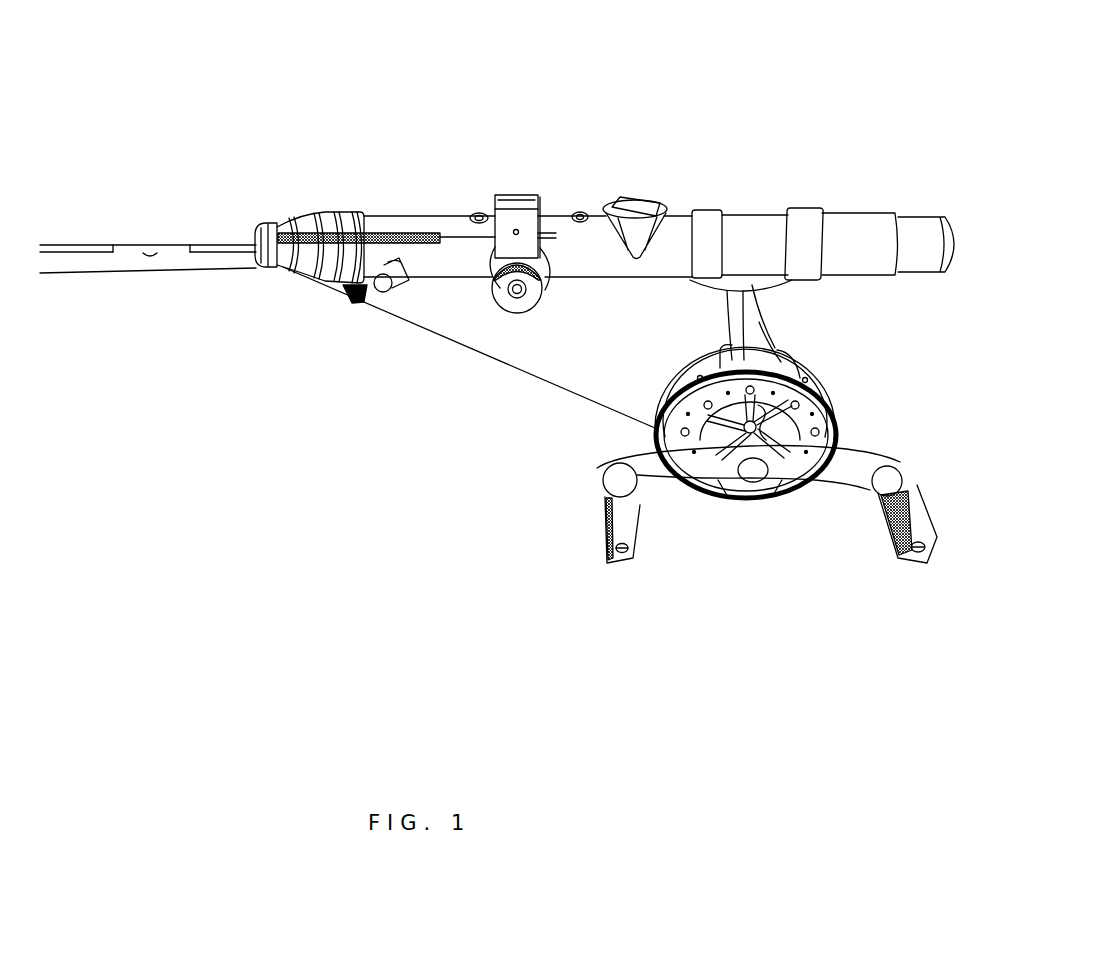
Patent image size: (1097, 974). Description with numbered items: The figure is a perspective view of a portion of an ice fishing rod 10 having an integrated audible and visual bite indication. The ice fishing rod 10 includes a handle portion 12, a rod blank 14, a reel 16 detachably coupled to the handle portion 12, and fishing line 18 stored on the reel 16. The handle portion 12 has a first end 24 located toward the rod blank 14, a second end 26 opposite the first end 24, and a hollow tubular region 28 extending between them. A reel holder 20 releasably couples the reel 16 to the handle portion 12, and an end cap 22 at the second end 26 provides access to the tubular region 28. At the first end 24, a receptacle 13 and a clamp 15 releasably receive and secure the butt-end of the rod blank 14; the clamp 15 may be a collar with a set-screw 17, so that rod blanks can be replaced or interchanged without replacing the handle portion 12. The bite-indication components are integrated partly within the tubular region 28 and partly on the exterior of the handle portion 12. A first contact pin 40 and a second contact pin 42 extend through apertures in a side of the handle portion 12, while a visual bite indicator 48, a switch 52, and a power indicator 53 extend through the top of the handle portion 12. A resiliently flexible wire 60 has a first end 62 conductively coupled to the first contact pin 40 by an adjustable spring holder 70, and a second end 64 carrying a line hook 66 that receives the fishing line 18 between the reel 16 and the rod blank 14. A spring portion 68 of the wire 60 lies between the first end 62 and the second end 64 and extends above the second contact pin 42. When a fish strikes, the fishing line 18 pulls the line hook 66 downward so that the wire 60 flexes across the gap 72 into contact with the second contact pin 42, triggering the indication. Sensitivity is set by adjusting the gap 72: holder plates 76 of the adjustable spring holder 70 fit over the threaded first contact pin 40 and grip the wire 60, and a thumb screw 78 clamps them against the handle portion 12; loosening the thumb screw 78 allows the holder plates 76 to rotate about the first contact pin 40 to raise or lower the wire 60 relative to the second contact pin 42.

The ice fishing rod 10 is at (746, 46).
The handle portion 12 is at (745, 205).
The receptacle 13 is at (222, 240).
The rod blank 14 is at (88, 243).
The clamp 15 is at (249, 234).
The reel 16 is at (833, 410).
The set-screw 17 is at (355, 300).
The fishing line 18 is at (503, 370).
The reel holder 20 is at (812, 210).
The end cap 22 is at (958, 270).
The first end 24 is at (298, 187).
The second end 26 is at (924, 190).
The tubular region 28 is at (655, 262).
The first contact pin 40 is at (522, 300).
The second contact pin 42 is at (395, 282).
The visual bite indicator 48 is at (483, 200).
The switch 52 is at (632, 200).
The power indicator 53 is at (589, 200).
The resiliently flexible wire 60 is at (443, 226).
The first end 62 is at (558, 202).
The second end 64 is at (250, 290).
The line hook 66 is at (280, 280).
The spring portion 68 is at (381, 215).
The adjustable spring holder 70 is at (555, 296).
The gap 72 is at (440, 282).
The holder plates 76 is at (520, 196).
The thumb screw 78 is at (509, 304).